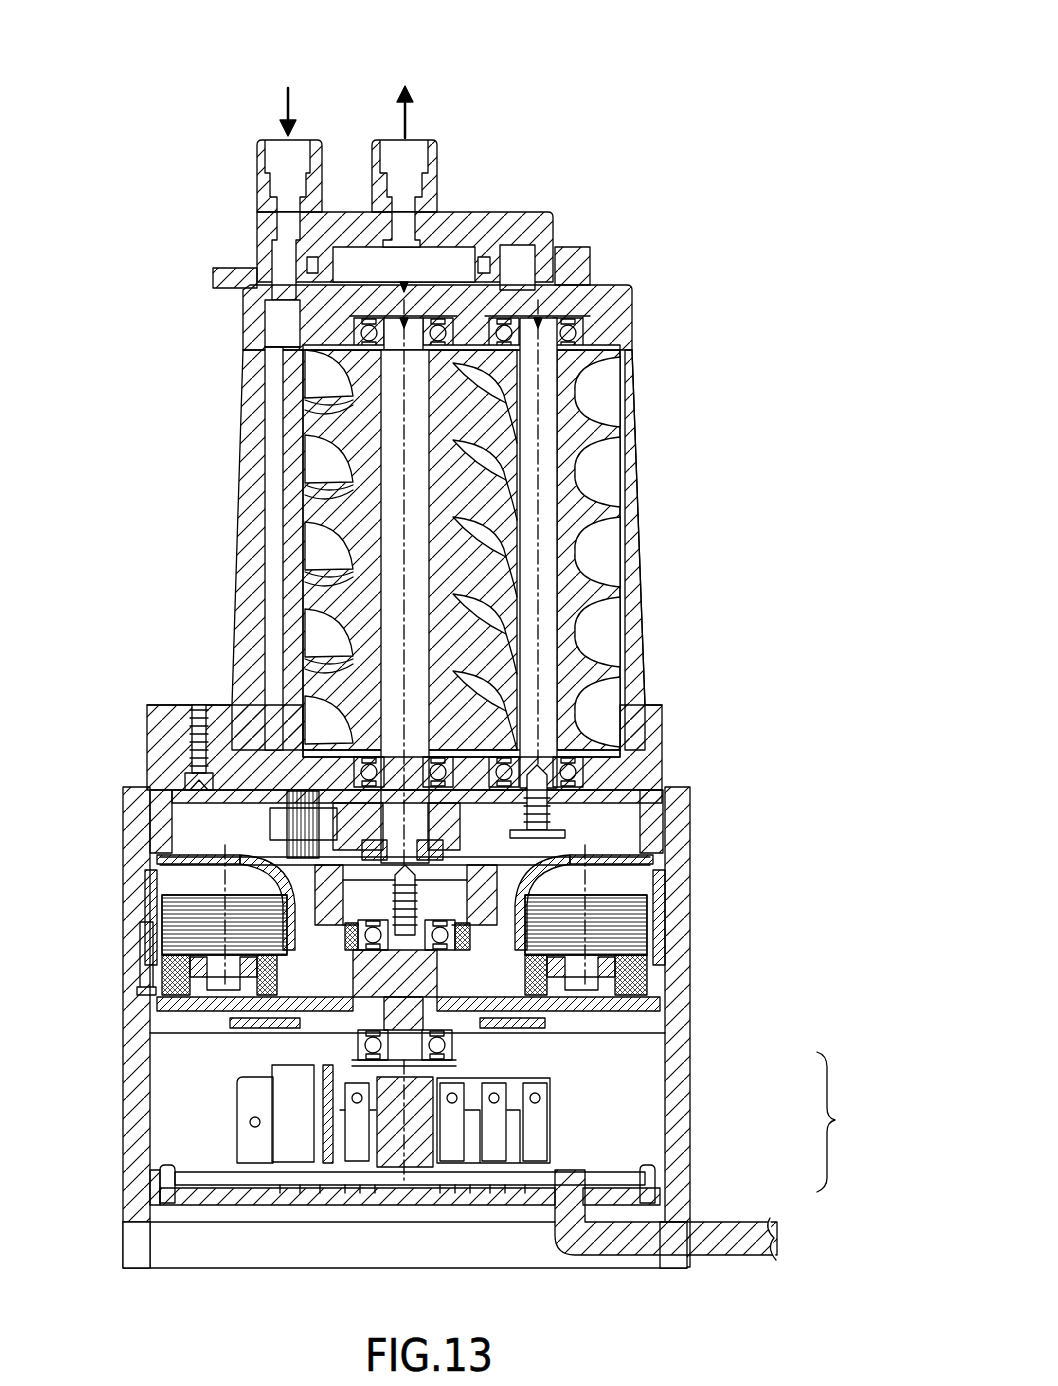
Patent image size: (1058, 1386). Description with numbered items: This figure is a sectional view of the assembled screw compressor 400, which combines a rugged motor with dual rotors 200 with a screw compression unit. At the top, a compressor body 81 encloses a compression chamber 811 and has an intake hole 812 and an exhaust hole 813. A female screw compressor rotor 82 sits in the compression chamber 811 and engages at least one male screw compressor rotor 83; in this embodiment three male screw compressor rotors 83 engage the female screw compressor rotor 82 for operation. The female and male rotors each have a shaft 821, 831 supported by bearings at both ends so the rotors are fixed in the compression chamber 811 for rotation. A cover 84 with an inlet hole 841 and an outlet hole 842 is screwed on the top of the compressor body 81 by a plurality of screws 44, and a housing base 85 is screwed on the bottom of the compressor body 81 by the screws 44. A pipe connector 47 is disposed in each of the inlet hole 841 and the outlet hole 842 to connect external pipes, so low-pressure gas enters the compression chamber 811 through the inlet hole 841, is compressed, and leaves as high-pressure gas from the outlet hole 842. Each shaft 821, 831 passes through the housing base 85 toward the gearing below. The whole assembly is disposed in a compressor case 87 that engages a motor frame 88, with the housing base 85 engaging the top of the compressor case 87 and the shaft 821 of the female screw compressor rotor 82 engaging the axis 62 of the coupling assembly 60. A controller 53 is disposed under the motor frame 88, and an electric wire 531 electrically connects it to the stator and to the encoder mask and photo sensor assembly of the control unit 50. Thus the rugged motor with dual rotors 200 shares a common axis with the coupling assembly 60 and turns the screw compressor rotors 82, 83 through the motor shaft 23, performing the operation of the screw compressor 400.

The screw compressor 400 is at (77, 22).
The pipe connector 47 is at (262, 156).
The cover 84 is at (520, 232).
The outlet hole 842 is at (420, 232).
The inlet hole 841 is at (268, 222).
The exhaust hole 813 is at (400, 287).
The intake hole 812 is at (282, 340).
The compressor body 81 is at (610, 318).
The compression chamber 811 is at (618, 416).
The female screw compressor rotor 82 is at (507, 453).
The shaft of the female screw compressor rotor 821 is at (415, 522).
The male screw compressor rotor 83 is at (567, 587).
The shaft of the male screw compressor rotor 831 is at (543, 633).
The screw 44 is at (200, 748).
The housing base 85 is at (620, 775).
The axis 62 is at (520, 830).
The coupling assembly 60 is at (483, 885).
The rugged motor with dual rotors 200 is at (605, 915).
The motor shaft 23 is at (267, 1020).
The compressor case 87 is at (680, 985).
The motor frame 88 is at (670, 1030).
The controller 53 is at (532, 1130).
The electric wire 531 is at (722, 1240).
The control unit 50 is at (841, 1122).